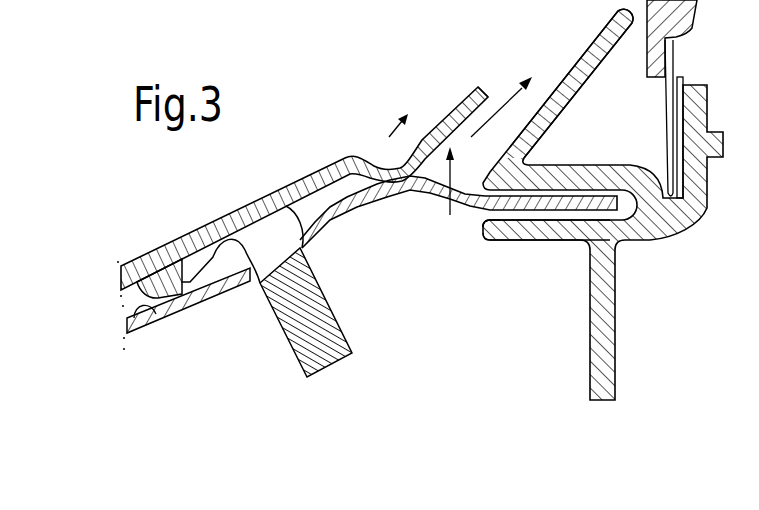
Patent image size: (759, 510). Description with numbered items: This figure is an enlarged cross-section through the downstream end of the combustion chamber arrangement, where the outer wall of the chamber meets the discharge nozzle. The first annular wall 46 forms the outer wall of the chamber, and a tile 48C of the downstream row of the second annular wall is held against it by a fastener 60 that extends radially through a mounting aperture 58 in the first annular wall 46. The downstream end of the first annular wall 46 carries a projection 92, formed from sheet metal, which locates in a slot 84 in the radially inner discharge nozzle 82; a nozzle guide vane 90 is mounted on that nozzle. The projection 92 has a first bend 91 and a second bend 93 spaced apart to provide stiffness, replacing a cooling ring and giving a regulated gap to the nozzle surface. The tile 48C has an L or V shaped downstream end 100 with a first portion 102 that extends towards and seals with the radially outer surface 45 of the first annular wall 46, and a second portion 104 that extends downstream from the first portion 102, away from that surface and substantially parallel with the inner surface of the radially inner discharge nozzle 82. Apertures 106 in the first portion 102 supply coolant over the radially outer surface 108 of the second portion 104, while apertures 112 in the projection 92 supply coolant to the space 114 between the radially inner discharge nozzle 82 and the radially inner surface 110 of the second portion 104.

The radially outer surface 45 is at (153, 319).
The first annular wall 46 is at (181, 306).
The tile 48C is at (197, 234).
The mounting aperture 58 is at (302, 246).
The fastener 60 is at (330, 299).
The radially inner discharge nozzle 82 is at (603, 204).
The slot 84 is at (577, 217).
The nozzle guide vane 90 is at (678, 19).
The first bend 91 is at (458, 190).
The projection 92 is at (502, 211).
The second bend 93 is at (477, 212).
The downstream end 100 is at (306, 163).
The first portion 102 is at (388, 174).
The second portion 104 is at (446, 109).
The aperture 106 is at (369, 158).
The radially outer surface 108 is at (444, 116).
The radially inner surface 110 is at (488, 108).
The aperture 112 is at (449, 215).
The space 114 is at (512, 130).